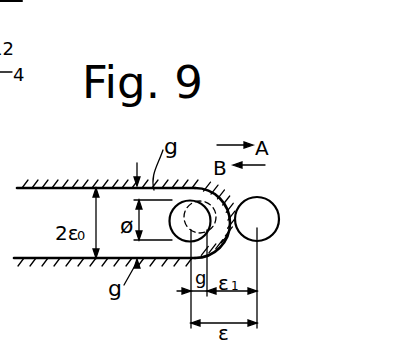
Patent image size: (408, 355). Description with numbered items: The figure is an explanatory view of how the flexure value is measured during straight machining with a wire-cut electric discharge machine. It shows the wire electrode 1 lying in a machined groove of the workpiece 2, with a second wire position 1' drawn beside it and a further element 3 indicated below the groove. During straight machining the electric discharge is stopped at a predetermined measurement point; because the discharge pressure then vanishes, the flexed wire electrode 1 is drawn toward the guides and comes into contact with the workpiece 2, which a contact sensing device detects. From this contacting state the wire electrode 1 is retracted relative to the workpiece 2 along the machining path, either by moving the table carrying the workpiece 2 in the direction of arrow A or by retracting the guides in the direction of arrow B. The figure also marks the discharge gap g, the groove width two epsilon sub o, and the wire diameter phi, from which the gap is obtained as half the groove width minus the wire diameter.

The wire electrode 1 is at (179, 267).
The second ball 1' is at (272, 200).
The workpiece 2 is at (38, 172).
The lower plate 3 is at (48, 243).